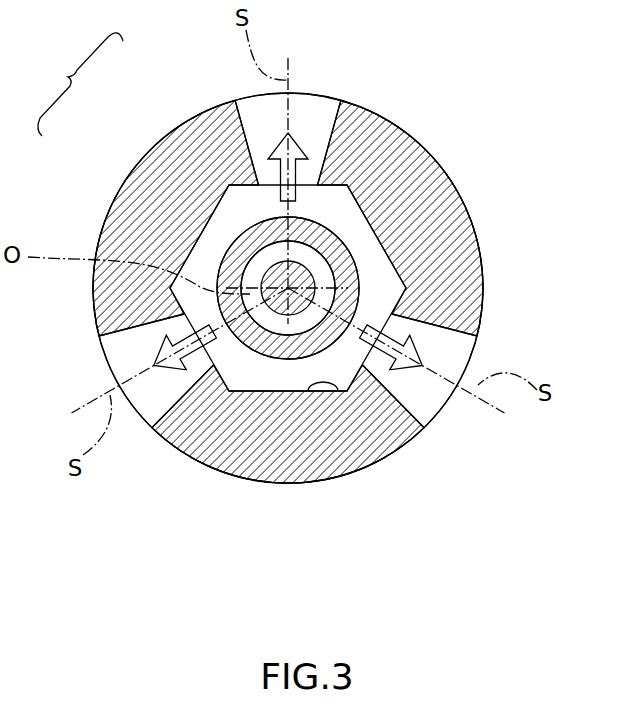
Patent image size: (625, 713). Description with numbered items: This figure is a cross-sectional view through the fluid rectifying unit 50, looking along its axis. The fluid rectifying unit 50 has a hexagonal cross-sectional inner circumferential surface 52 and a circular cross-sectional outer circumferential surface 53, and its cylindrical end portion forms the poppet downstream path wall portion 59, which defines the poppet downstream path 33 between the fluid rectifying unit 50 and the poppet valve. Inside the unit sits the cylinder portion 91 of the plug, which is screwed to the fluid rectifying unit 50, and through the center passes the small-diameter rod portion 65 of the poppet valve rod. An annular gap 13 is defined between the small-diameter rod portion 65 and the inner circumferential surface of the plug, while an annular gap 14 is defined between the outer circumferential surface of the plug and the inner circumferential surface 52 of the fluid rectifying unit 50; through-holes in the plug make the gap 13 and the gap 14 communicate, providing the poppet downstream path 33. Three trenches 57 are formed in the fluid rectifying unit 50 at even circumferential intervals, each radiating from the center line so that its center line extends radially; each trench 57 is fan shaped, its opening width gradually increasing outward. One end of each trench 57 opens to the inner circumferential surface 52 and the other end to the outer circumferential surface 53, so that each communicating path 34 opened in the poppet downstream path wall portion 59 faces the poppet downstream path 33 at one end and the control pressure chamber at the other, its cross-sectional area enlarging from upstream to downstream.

The annular gap 13 is at (243, 248).
The annular gap 14 is at (219, 238).
The poppet downstream path 33 is at (79, 84).
The communicating path 34 is at (261, 127).
The fluid rectifying unit 50 is at (469, 175).
The inner circumferential surface 52 is at (346, 392).
The outer circumferential surface 53 is at (287, 484).
The trench 57 is at (331, 135).
The poppet downstream path wall portion 59 is at (403, 147).
The small-diameter rod portion 65 is at (331, 293).
The cylinder portion 91 is at (342, 272).